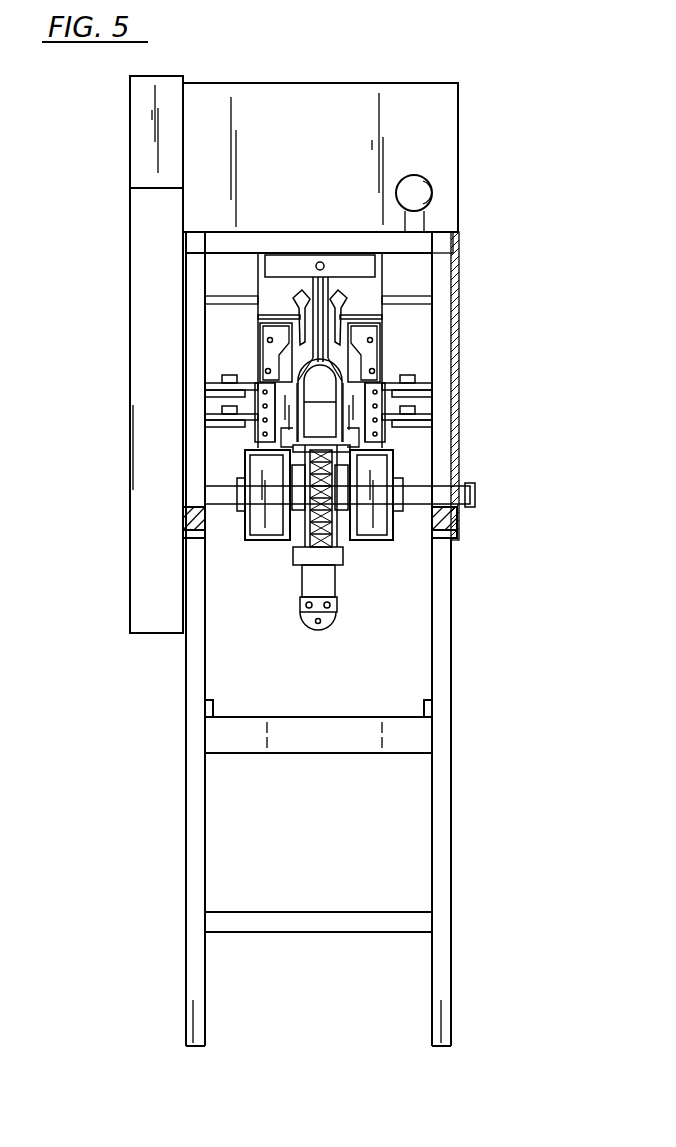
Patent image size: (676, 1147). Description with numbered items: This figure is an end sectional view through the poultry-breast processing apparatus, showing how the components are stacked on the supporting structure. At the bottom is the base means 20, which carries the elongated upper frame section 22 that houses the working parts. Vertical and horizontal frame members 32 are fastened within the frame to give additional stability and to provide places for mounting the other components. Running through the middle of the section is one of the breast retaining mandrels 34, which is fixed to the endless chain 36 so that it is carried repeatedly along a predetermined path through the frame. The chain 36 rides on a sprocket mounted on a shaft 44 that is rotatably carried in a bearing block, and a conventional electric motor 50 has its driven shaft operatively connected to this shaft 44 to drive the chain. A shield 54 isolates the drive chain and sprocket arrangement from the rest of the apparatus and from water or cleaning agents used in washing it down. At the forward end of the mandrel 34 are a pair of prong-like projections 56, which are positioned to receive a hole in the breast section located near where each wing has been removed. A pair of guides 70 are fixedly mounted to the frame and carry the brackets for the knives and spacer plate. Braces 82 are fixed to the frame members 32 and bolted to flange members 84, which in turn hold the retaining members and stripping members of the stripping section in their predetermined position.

The base means 20 is at (464, 690).
The upper frame section 22 is at (472, 308).
The vertical and horizontal frame members 32 is at (305, 247).
The breast retaining mandrel 34 is at (323, 428).
The endless chain 36 is at (303, 537).
The shaft 44 is at (418, 490).
The electric motor 50 is at (404, 78).
The shield 54 is at (130, 228).
The prong-like projections 56 is at (302, 605).
The guides 70 is at (297, 300).
The brace 82 is at (222, 410).
The flange member 84 is at (222, 380).